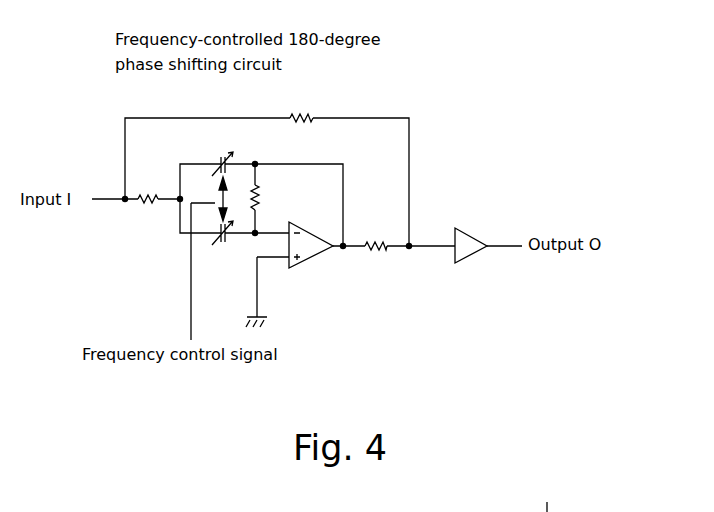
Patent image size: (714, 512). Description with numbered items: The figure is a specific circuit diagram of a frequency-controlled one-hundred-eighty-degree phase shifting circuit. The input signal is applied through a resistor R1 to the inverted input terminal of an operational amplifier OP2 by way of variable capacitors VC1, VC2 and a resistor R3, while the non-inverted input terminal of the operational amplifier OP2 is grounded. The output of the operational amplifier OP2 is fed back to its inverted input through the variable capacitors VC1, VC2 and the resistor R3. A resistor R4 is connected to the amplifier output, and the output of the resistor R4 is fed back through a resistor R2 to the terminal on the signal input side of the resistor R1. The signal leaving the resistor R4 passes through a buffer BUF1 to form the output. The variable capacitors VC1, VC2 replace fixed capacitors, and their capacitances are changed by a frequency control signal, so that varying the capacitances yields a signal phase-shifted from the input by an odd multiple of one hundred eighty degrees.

The resistor R1 is at (147, 212).
The resistor R2 is at (302, 106).
The resistor R3 is at (274, 200).
The resistor R4 is at (374, 262).
The variable capacitor VC1 is at (222, 151).
The variable capacitor VC2 is at (222, 242).
The operational amplifier OP2 is at (303, 262).
The buffer BUF1 is at (460, 264).